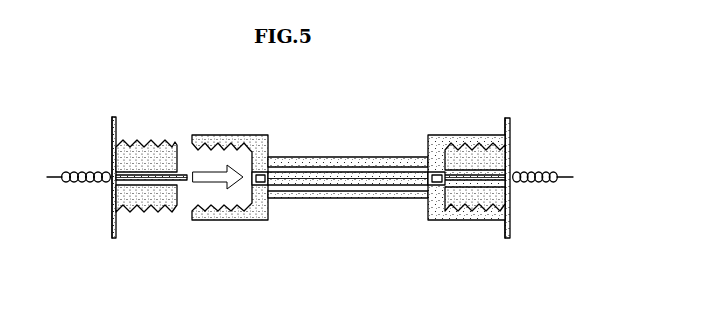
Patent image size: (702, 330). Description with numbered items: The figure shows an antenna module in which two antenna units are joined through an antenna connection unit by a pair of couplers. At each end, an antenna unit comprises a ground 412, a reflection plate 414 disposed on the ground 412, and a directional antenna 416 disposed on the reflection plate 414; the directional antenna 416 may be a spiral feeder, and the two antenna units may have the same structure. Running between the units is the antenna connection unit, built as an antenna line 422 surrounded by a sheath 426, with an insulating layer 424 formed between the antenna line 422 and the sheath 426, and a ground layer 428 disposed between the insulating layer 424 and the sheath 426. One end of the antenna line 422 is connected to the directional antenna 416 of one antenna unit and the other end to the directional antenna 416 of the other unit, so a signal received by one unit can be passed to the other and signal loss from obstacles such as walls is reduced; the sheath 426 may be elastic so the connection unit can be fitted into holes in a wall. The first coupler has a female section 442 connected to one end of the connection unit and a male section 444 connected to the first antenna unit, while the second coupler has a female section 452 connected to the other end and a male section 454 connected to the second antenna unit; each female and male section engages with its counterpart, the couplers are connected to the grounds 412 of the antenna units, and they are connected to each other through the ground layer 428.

The ground 412 is at (115, 117).
The reflection plate 414 is at (107, 125).
The directional antenna 416 is at (72, 170).
The antenna line 422 is at (322, 190).
The insulating layer 424 is at (380, 185).
The sheath 426 is at (290, 198).
The ground layer 428 is at (298, 160).
The female section 442 is at (228, 135).
The male section 444 is at (147, 140).
The female section 452 is at (437, 220).
The male section 454 is at (498, 193).